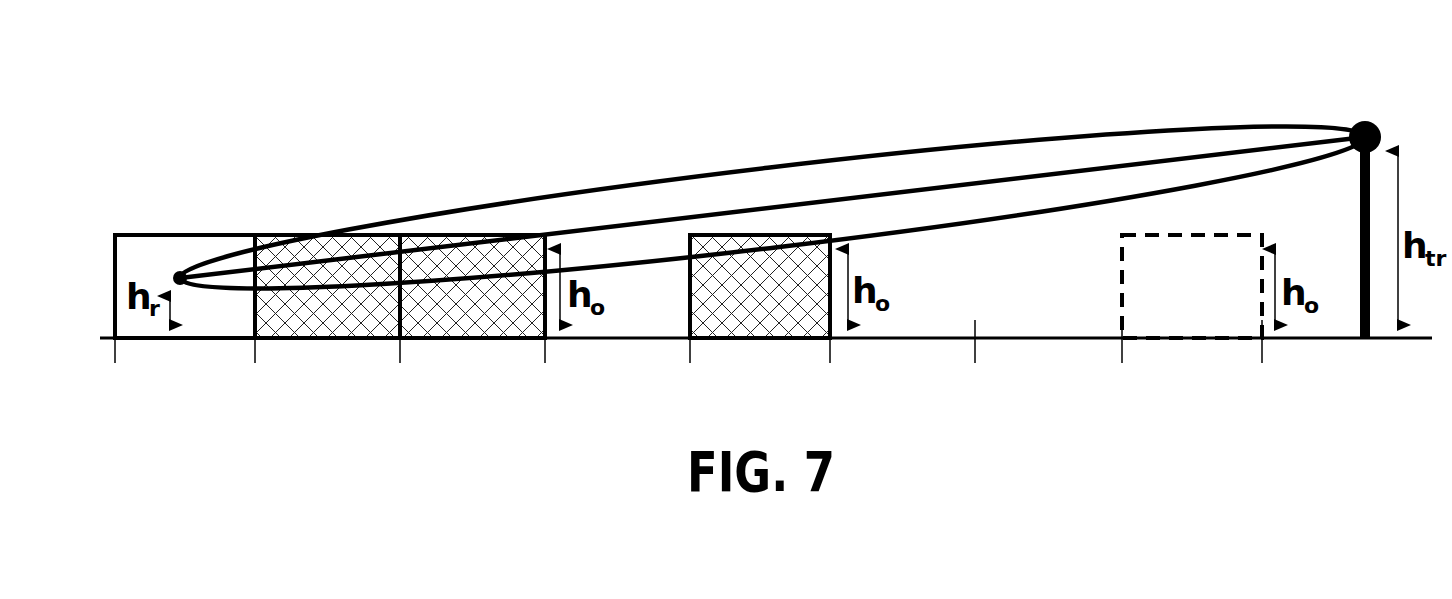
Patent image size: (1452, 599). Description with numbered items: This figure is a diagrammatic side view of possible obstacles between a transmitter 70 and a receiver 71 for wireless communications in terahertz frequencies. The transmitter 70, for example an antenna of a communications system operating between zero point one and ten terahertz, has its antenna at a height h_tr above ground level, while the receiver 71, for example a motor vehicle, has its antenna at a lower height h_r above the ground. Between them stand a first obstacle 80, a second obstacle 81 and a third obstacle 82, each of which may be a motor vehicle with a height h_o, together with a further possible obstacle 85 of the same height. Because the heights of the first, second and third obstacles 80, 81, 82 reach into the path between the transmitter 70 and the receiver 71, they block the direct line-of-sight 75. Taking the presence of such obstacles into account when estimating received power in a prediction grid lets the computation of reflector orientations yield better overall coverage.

The transmitter 70 is at (1358, 118).
The receiver 71 is at (180, 252).
The direct line-of-sight 75 is at (938, 167).
The first obstacle 80 is at (340, 243).
The second obstacle 81 is at (473, 265).
The third obstacle 82 is at (737, 247).
The possible obstacle 85 is at (1178, 263).